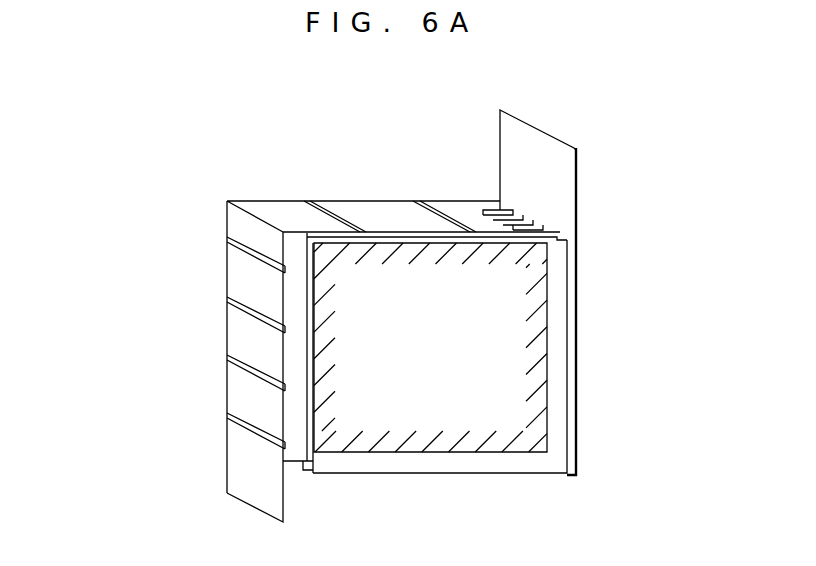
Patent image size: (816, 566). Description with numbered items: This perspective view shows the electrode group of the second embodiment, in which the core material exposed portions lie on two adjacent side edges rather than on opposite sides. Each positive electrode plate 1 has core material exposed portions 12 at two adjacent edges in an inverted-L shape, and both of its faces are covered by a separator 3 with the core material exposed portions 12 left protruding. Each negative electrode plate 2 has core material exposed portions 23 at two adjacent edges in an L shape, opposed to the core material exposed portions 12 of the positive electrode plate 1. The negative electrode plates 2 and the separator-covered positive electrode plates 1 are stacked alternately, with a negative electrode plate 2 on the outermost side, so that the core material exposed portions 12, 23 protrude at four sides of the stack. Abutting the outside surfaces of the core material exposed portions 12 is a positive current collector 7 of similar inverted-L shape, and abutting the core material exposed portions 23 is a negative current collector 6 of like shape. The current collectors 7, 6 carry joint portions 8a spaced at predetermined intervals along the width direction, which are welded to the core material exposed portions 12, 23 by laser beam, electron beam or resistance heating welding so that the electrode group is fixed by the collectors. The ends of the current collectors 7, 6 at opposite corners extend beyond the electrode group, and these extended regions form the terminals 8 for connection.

The positive electrode plate 1 is at (542, 227).
The negative electrode plate 2 is at (580, 305).
The separator 3 is at (550, 230).
The negative current collector 6 is at (495, 172).
The positive current collector 7 is at (220, 225).
The terminal 8 is at (528, 142).
The joint portion 8a is at (228, 420).
The core material exposed portion 12 is at (297, 353).
The core material exposed portion 23 is at (552, 353).